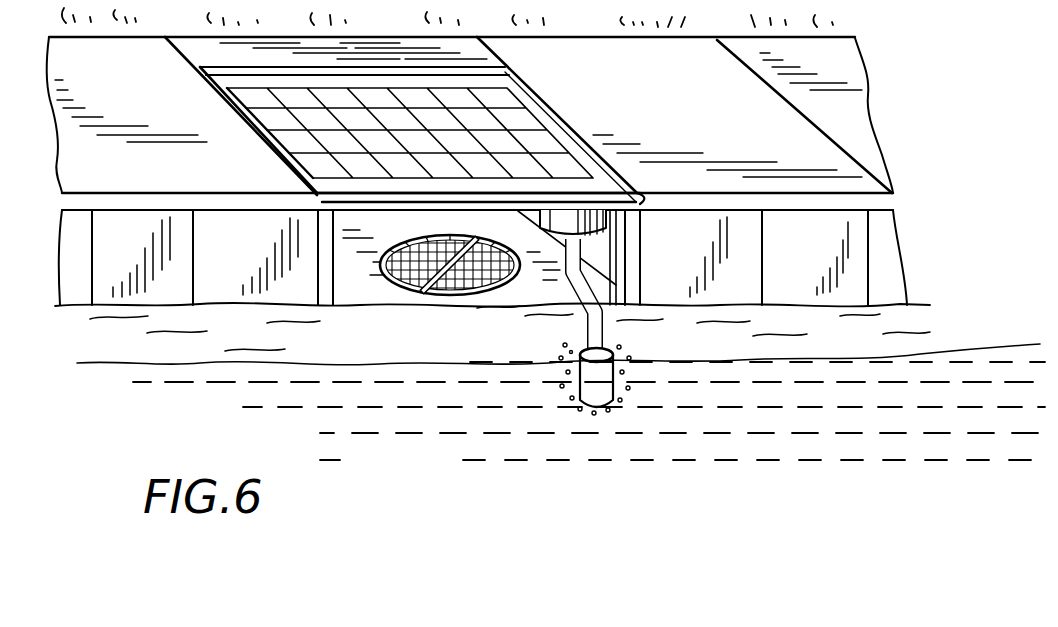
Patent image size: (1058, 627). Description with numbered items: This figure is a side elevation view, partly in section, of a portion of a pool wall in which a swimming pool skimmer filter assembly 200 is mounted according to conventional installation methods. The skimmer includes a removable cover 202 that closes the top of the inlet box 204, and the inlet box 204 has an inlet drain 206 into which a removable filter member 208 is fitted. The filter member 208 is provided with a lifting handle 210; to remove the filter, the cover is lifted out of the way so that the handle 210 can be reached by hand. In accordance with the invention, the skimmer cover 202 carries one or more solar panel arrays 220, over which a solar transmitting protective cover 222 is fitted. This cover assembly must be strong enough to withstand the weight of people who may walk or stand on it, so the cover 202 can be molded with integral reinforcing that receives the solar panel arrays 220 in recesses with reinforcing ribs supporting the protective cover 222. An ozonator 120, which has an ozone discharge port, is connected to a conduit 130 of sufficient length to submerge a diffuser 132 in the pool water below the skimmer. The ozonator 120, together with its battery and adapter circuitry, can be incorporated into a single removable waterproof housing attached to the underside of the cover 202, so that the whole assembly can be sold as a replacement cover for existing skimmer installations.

The swimming pool skimmer filter assembly 200 is at (637, 182).
The removable cover 202 is at (322, 204).
The inlet box 204 is at (605, 258).
The inlet drain 206 is at (477, 292).
The removable filter member 208 is at (382, 278).
The lifting handle 210 is at (422, 290).
The solar panel array 220 is at (500, 100).
The solar transmitting protective cover 222 is at (317, 193).
The ozonator 120 is at (577, 217).
The conduit 130 is at (587, 335).
The diffuser 132 is at (598, 390).